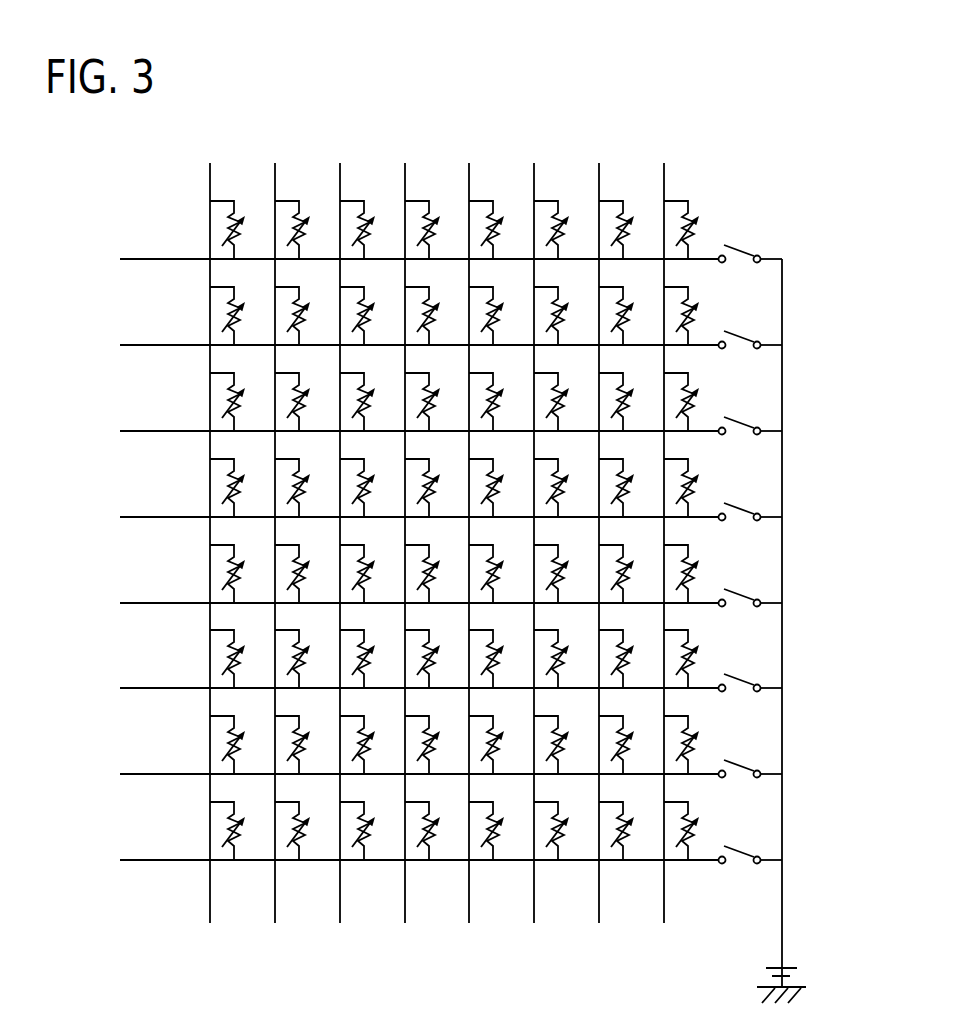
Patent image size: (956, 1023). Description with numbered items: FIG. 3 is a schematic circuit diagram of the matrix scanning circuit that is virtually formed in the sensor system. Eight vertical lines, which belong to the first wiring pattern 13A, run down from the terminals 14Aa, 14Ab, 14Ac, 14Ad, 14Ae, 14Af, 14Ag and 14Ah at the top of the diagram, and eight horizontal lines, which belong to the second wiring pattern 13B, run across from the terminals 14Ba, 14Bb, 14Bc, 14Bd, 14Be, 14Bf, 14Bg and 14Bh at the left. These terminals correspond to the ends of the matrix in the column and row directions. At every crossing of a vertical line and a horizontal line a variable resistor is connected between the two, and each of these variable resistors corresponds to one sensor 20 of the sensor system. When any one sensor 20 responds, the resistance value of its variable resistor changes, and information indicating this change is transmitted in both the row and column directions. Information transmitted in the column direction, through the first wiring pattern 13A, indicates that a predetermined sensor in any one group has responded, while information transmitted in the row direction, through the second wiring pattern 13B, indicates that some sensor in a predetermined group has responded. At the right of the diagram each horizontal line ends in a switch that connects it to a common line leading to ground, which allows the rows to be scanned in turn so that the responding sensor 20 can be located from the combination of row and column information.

The first wiring pattern 13A is at (664, 169).
The second wiring pattern 13B is at (152, 345).
The sensor 20 is at (720, 233).
The output terminal 14Aa is at (210, 528).
The output terminal 14Ab is at (275, 528).
The output terminal 14Ac is at (340, 528).
The output terminal 14Ad is at (405, 528).
The output terminal 14Ae is at (469, 528).
The output terminal 14Af is at (534, 528).
The output terminal 14Ag is at (599, 528).
The output terminal 14Ah is at (664, 528).
The second output terminal 14Ba is at (393, 260).
The second output terminal 14Bb is at (393, 346).
The second output terminal 14Bc is at (393, 432).
The second output terminal 14Bd is at (393, 518).
The second output terminal 14Be is at (393, 604).
The second output terminal 14Bf is at (393, 689).
The second output terminal 14Bg is at (393, 775).
The second output terminal 14Bh is at (393, 861).